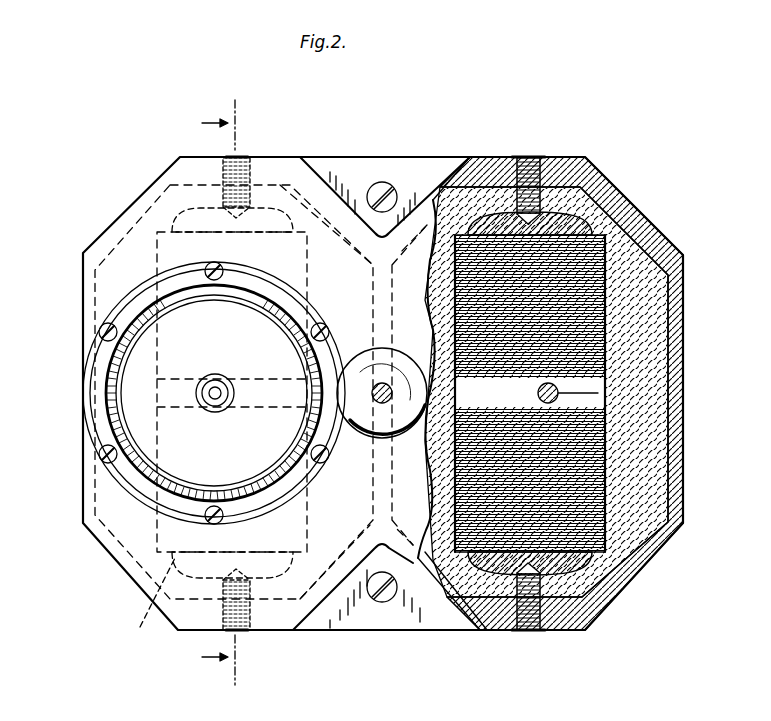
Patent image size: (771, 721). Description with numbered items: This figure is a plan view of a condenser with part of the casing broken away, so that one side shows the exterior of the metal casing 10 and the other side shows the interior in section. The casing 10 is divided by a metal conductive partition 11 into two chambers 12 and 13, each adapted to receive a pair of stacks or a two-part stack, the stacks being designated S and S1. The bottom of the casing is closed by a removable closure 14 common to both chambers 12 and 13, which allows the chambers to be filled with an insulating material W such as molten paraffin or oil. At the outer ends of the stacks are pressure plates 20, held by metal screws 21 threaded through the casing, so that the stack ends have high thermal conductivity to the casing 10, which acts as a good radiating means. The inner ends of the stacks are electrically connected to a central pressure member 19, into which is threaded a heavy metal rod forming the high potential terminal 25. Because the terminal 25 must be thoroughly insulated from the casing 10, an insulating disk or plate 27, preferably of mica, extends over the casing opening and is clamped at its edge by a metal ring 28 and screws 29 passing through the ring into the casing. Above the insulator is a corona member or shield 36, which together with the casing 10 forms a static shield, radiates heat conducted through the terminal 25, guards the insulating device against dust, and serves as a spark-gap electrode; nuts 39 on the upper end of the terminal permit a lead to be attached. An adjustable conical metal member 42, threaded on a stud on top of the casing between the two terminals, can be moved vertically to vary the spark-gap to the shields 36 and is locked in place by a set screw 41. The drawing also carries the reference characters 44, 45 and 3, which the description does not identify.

The casing 10 is at (683, 277).
The insulating material W is at (676, 313).
The condenser stack S is at (606, 472).
The condenser stack S1 is at (608, 366).
The central pressure member 19 is at (600, 395).
The metal rod or terminal 25 is at (220, 385).
The pressure plate 20 is at (492, 220).
The metal screw 21 is at (240, 157).
The chamber 13 is at (600, 589).
The removable closure 14 is at (356, 632).
The screw 45 is at (392, 188).
The cushion pad 44 is at (118, 250).
The chamber 12 is at (146, 604).
The metal conductive partition 11 is at (372, 486).
The adjustable conical metal member 42 is at (368, 349).
The set screw 41 is at (380, 402).
The metal ring 28 is at (86, 405).
The insulating disk or plate 27 is at (117, 428).
The screw 29 is at (222, 270).
The corona member or shield 36 is at (183, 487).
The nut 39 is at (210, 404).
The section line 3 is at (218, 393).